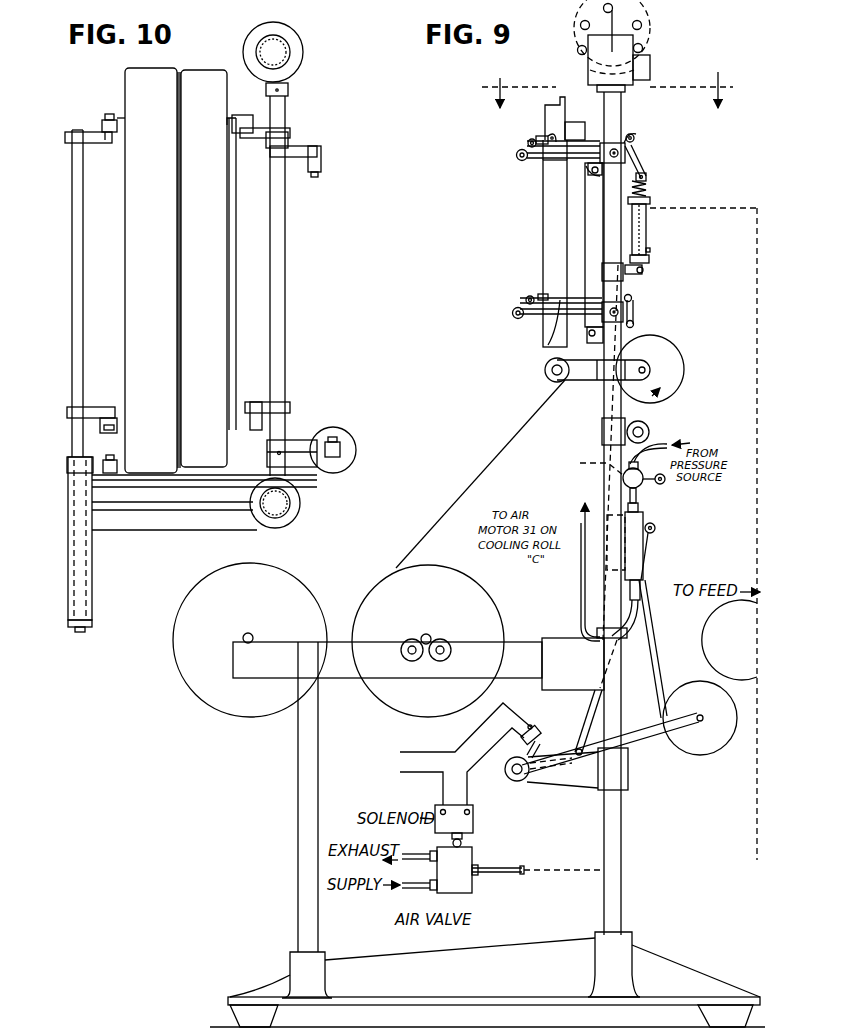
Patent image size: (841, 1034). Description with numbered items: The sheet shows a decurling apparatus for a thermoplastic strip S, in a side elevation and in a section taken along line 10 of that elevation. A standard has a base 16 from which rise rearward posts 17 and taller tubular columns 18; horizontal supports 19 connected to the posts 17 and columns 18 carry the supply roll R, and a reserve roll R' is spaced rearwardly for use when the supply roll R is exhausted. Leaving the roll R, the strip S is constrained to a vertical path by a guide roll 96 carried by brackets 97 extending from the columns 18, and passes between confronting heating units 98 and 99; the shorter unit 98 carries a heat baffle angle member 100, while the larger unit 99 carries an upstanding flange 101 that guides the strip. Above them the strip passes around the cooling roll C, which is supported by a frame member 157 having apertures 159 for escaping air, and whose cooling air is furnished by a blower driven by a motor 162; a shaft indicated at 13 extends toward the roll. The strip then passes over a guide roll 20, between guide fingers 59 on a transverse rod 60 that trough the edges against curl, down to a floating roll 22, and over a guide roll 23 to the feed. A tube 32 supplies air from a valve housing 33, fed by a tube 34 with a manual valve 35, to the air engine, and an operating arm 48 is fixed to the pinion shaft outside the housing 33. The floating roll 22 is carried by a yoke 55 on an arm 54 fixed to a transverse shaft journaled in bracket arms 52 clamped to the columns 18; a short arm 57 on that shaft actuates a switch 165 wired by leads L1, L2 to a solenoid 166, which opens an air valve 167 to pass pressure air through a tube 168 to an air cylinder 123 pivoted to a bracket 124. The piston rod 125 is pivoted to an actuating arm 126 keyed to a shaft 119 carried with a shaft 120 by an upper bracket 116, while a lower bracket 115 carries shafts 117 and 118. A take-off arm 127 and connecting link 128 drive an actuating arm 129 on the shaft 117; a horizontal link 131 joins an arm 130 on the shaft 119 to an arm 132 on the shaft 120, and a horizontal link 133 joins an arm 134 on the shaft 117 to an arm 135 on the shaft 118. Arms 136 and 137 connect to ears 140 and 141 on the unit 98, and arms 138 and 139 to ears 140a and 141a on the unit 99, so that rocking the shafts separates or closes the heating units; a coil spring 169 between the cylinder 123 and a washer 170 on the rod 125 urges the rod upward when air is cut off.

In FIG. 9, the section line 10— 10 is at (613, 88).
In FIG. 9, the drive shaft 13 is at (628, 25).
In FIG. 9, the base 16 is at (396, 955).
In FIG. 9, the posts 17 is at (312, 923).
In FIG. 10, the columns 18 is at (290, 518).
In FIG. 9, the columns 18 is at (616, 120).
In FIG. 9, the horizontal supports 19 is at (333, 682).
In FIG. 9, the guide roll 20 is at (685, 382).
In FIG. 9, the floating roll 22 is at (689, 683).
In FIG. 9, the guide roll 23 is at (737, 670).
In FIG. 9, the tube 32 is at (581, 600).
In FIG. 9, the valve housing 33 is at (641, 525).
In FIG. 9, the tube 34 is at (656, 443).
In FIG. 9, the manual valve 35 is at (666, 481).
In FIG. 9, the operating arm 48 is at (653, 532).
In FIG. 9, the bracket arms 52 is at (577, 786).
In FIG. 9, the arm 54 is at (636, 736).
In FIG. 9, the yoke 55 is at (679, 725).
In FIG. 9, the short arm 57 is at (545, 746).
In FIG. 9, the guide fingers 59 is at (593, 466).
In FIG. 9, the transverse rod 60 is at (650, 428).
In FIG. 9, the guide roll 96 is at (550, 380).
In FIG. 9, the brackets 97 is at (577, 382).
In FIG. 10, the heating unit 98 is at (222, 262).
In FIG. 9, the heating unit 98 is at (579, 232).
In FIG. 10, the heating unit 99 is at (140, 236).
In FIG. 9, the heating unit 99 is at (548, 233).
In FIG. 9, the angle member 100 is at (566, 112).
In FIG. 9, the upstanding flange 101 is at (558, 100).
In FIG. 9, the lower bracket 115 is at (538, 314).
In FIG. 10, the upper bracket 116 is at (150, 525).
In FIG. 9, the upper bracket 116 is at (556, 168).
In FIG. 9, the shaft 117 is at (640, 310).
In FIG. 9, the shaft 118 is at (514, 315).
In FIG. 10, the shaft 119 is at (286, 324).
In FIG. 9, the shaft 119 is at (640, 151).
In FIG. 10, the shaft 120 is at (72, 262).
In FIG. 9, the shaft 120 is at (517, 156).
In FIG. 9, the air cylinder 123 is at (648, 231).
In FIG. 9, the bracket 124 is at (642, 276).
In FIG. 9, the piston rod 125 is at (648, 243).
In FIG. 10, the actuating arm 126 is at (297, 444).
In FIG. 9, the actuating arm 126 is at (636, 165).
In FIG. 10, the take-off arm 127 is at (318, 153).
In FIG. 10, the connecting link 128 is at (322, 166).
In FIG. 9, the connecting link 128 is at (632, 298).
In FIG. 9, the actuating arm 129 is at (635, 323).
In FIG. 10, the arm 130 is at (320, 468).
In FIG. 9, the arm 130 is at (635, 139).
In FIG. 10, the horizontal link 131 is at (210, 487).
In FIG. 9, the horizontal link 131 is at (540, 158).
In FIG. 10, the arm 132 is at (100, 465).
In FIG. 9, the arm 132 is at (535, 140).
In FIG. 9, the horizontal link 133 is at (548, 345).
In FIG. 9, the arm 134 is at (667, 293).
In FIG. 9, the arm 135 is at (526, 301).
In FIG. 10, the arms 136 is at (268, 134).
In FIG. 9, the arms 136 is at (597, 170).
In FIG. 9, the arms 137 is at (601, 333).
In FIG. 10, the arms 138 is at (100, 143).
In FIG. 9, the arms 138 is at (528, 144).
In FIG. 9, the arms 139 is at (538, 317).
In FIG. 10, the ears 140 is at (237, 115).
In FIG. 9, the ears 140 is at (647, 178).
In FIG. 10, the ears 140a is at (112, 118).
In FIG. 9, the ears 140a is at (548, 136).
In FIG. 9, the ears 141 is at (603, 369).
In FIG. 9, the ears 141a is at (542, 297).
In FIG. 9, the frame member 157 is at (580, 43).
In FIG. 9, the apertures 159 is at (641, 24).
In FIG. 9, the motor 162 is at (594, 57).
In FIG. 9, the switch 165 is at (532, 728).
In FIG. 9, the solenoid 166 is at (473, 823).
In FIG. 9, the air valve 167 is at (478, 890).
In FIG. 9, the tube 168 is at (500, 868).
In FIG. 9, the coil spring 169 is at (648, 191).
In FIG. 9, the plate or washer 170 is at (651, 202).
In FIG. 9, the cooling roll C is at (598, 18).
In FIG. 9, the strip S is at (478, 478).
In FIG. 9, the supply roll R is at (428, 637).
In FIG. 9, the reserve roll R' is at (250, 638).
In FIG. 9, the lead L1 is at (452, 732).
In FIG. 9, the lead L2 is at (448, 766).